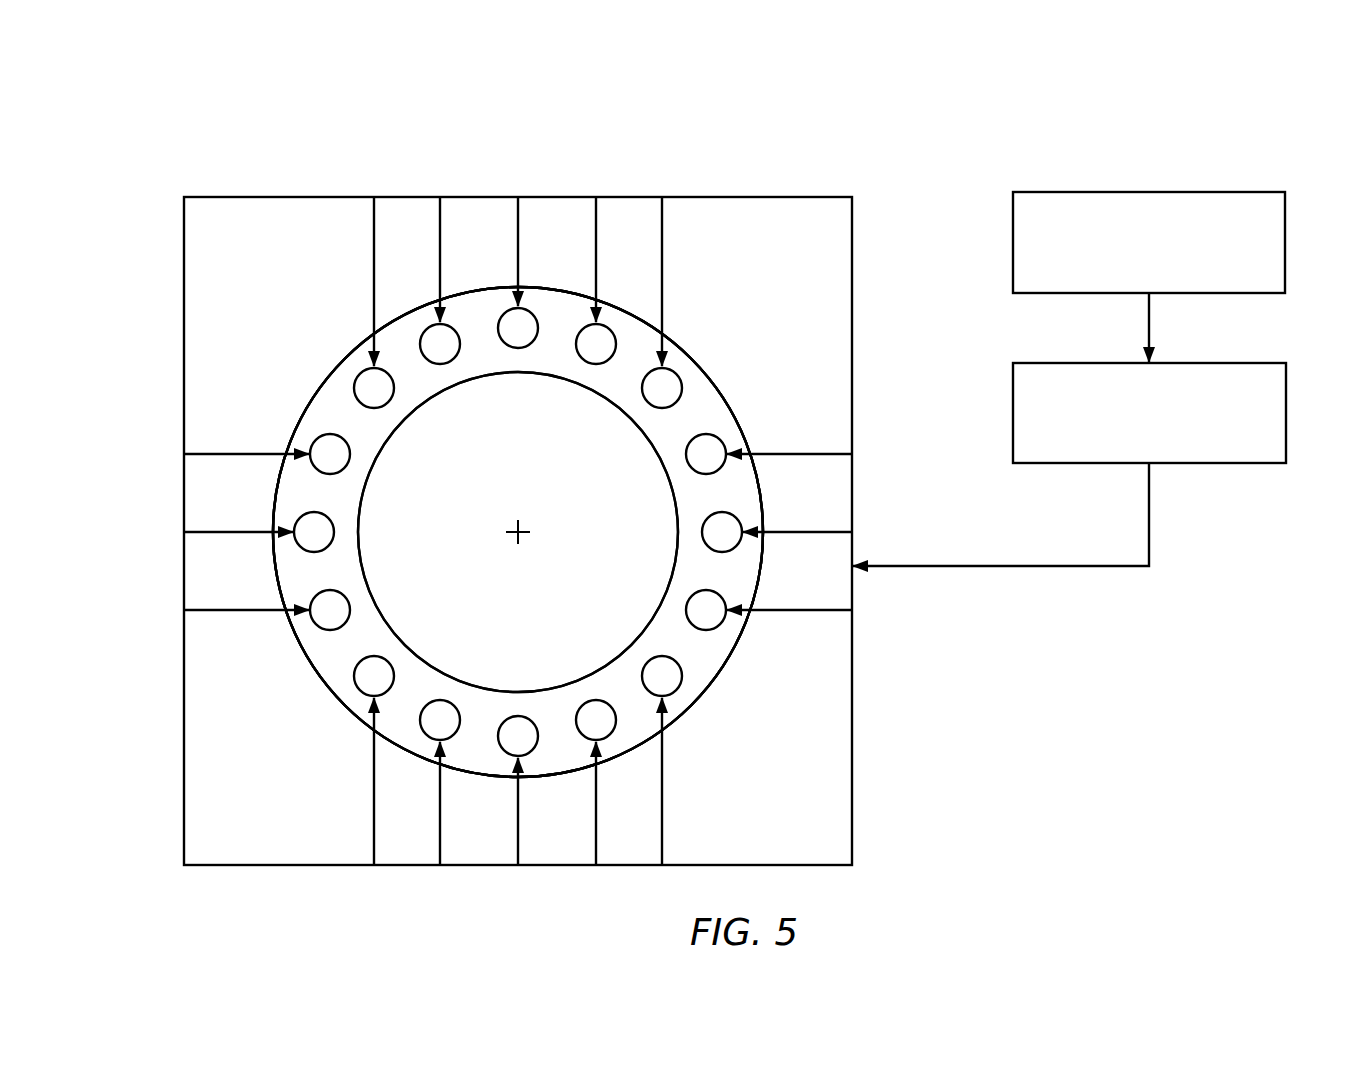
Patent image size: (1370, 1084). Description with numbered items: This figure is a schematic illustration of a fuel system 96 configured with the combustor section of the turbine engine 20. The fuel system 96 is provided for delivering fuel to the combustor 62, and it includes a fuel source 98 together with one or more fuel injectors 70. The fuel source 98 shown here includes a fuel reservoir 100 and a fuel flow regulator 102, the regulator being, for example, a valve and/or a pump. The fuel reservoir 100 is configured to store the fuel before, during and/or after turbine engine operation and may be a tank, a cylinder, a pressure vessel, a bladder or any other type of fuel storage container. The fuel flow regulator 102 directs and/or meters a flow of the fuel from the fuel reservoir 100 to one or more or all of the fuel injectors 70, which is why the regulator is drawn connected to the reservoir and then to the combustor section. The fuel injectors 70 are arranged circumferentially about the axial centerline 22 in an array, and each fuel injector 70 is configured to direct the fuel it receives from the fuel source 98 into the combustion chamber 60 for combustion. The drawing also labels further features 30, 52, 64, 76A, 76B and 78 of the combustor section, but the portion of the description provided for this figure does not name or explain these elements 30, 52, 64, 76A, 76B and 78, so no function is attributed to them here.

The turbine engine 20 is at (168, 126).
The axial centerline 22 is at (527, 529).
The annular body 30 is at (736, 356).
The fluid passage 52 is at (318, 516).
The combustion chamber 60 is at (349, 506).
The combustor 62 is at (742, 404).
The outlet 64 is at (526, 532).
The fuel injectors 70 is at (452, 361).
The inner surface 76A is at (396, 442).
The outer surface 76B is at (340, 360).
The annular face 78 is at (330, 405).
The fuel system 96 is at (1100, 308).
The fuel source 98 is at (1180, 199).
The fuel reservoir 100 is at (1128, 273).
The fuel flow regulator 102 is at (1128, 444).